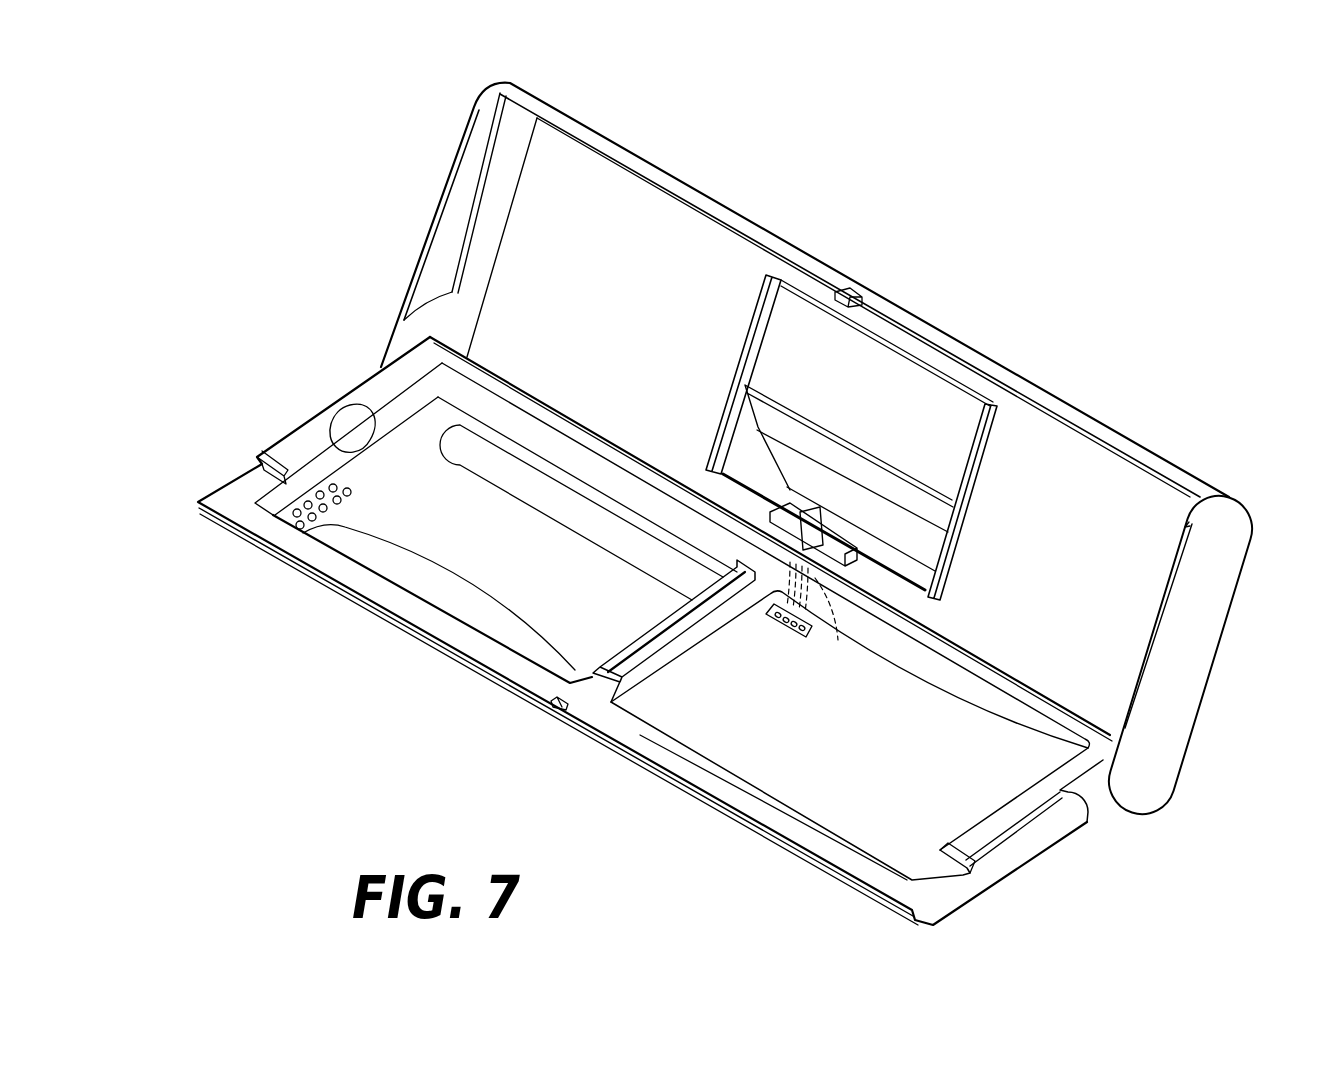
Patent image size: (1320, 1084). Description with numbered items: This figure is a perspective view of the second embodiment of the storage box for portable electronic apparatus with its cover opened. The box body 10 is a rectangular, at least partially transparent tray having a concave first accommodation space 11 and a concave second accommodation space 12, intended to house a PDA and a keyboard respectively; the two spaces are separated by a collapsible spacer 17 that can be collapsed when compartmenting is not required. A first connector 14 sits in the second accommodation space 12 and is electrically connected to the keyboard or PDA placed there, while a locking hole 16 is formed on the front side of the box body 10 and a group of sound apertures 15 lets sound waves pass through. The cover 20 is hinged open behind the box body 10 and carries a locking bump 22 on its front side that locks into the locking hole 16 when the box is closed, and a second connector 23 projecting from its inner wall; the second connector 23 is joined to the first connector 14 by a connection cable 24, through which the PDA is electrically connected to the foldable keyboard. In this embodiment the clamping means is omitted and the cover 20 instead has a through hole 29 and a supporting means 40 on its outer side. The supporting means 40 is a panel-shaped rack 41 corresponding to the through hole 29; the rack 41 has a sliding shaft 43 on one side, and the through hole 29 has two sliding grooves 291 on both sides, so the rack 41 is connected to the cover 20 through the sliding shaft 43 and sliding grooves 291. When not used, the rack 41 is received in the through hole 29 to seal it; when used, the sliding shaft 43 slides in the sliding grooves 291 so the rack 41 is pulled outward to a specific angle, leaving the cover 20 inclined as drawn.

The box body 10 is at (320, 390).
The first accommodation space 11 is at (463, 553).
The second accommodation space 12 is at (762, 735).
The first connector 14 is at (795, 634).
The sound apertures 15 is at (318, 494).
The locking hole 16 is at (555, 706).
The spacer 17 is at (648, 650).
The cover 20 is at (427, 205).
The locking bump 22 is at (852, 290).
The second connector 23 is at (815, 520).
The connection cable 24 is at (826, 608).
The through hole 29 is at (895, 362).
The sliding grooves 291 is at (755, 340).
The supporting means 40 is at (922, 470).
The rack 41 is at (915, 542).
The sliding shaft 43 is at (745, 405).